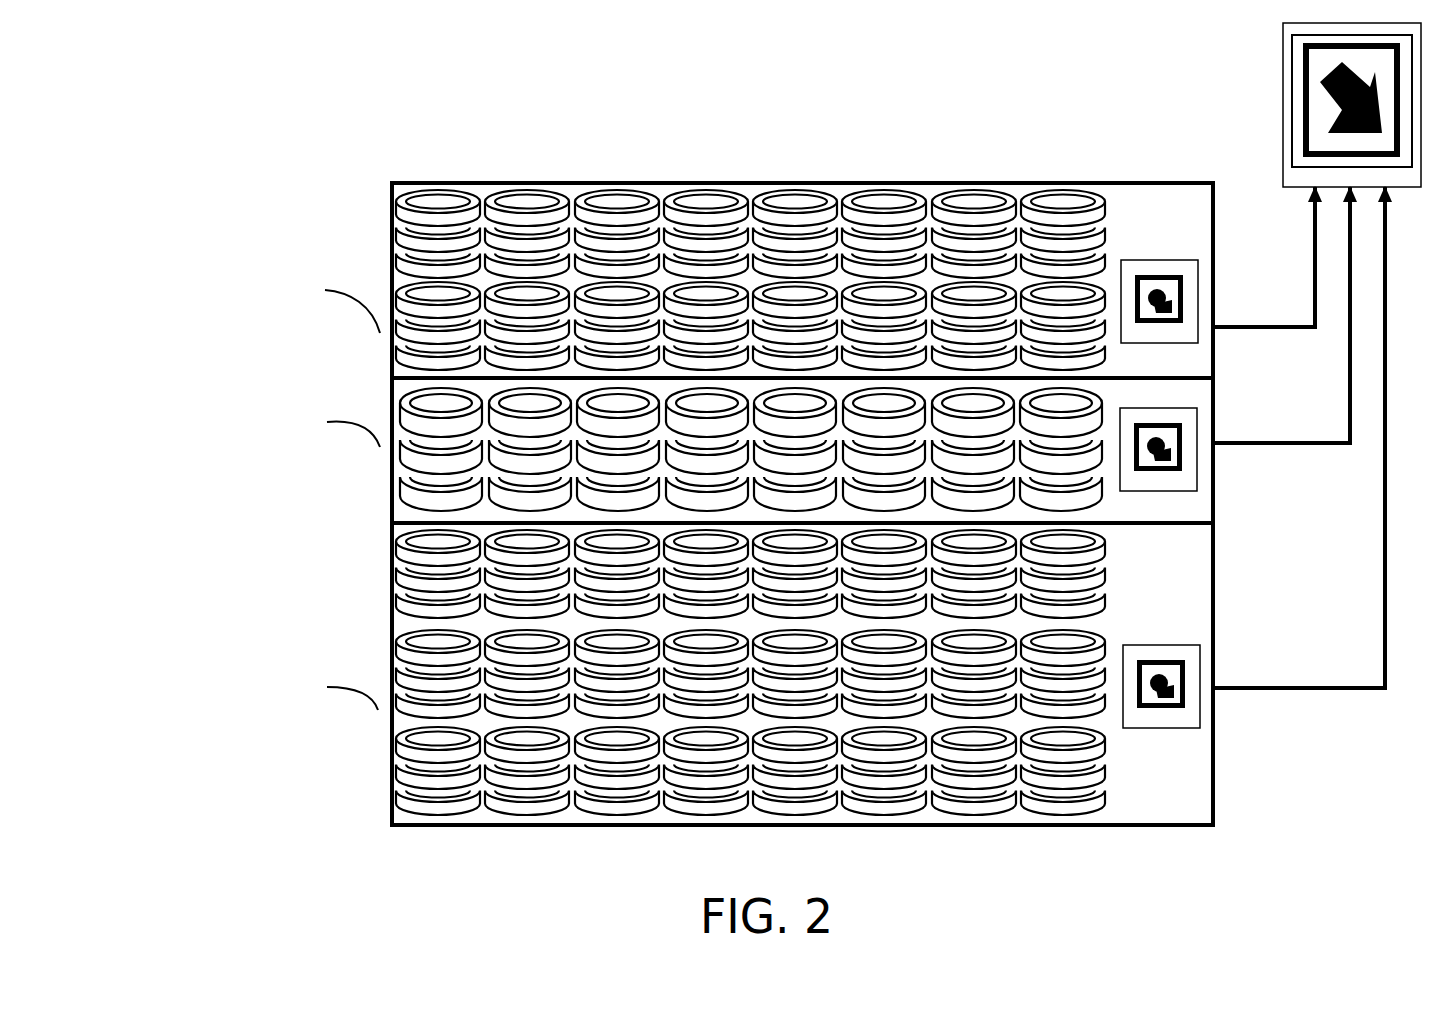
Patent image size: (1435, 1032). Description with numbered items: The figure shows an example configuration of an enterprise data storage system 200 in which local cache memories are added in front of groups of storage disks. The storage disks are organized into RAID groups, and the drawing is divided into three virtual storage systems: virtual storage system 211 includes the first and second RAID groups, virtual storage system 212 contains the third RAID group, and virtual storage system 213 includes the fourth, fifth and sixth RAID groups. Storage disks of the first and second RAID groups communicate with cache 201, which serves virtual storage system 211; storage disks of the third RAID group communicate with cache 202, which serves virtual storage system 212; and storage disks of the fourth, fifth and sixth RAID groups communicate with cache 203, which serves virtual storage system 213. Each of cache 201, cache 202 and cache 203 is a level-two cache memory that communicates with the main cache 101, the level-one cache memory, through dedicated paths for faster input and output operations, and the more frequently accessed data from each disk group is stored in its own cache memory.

The enterprise data storage system configuration 200 is at (318, 88).
The virtual storage system 211 is at (800, 163).
The virtual storage system 212 is at (410, 512).
The virtual storage system 213 is at (765, 830).
The main cache 101 is at (1260, 92).
The cache 201 is at (1228, 278).
The cache 202 is at (1235, 487).
The cache 203 is at (1263, 630).